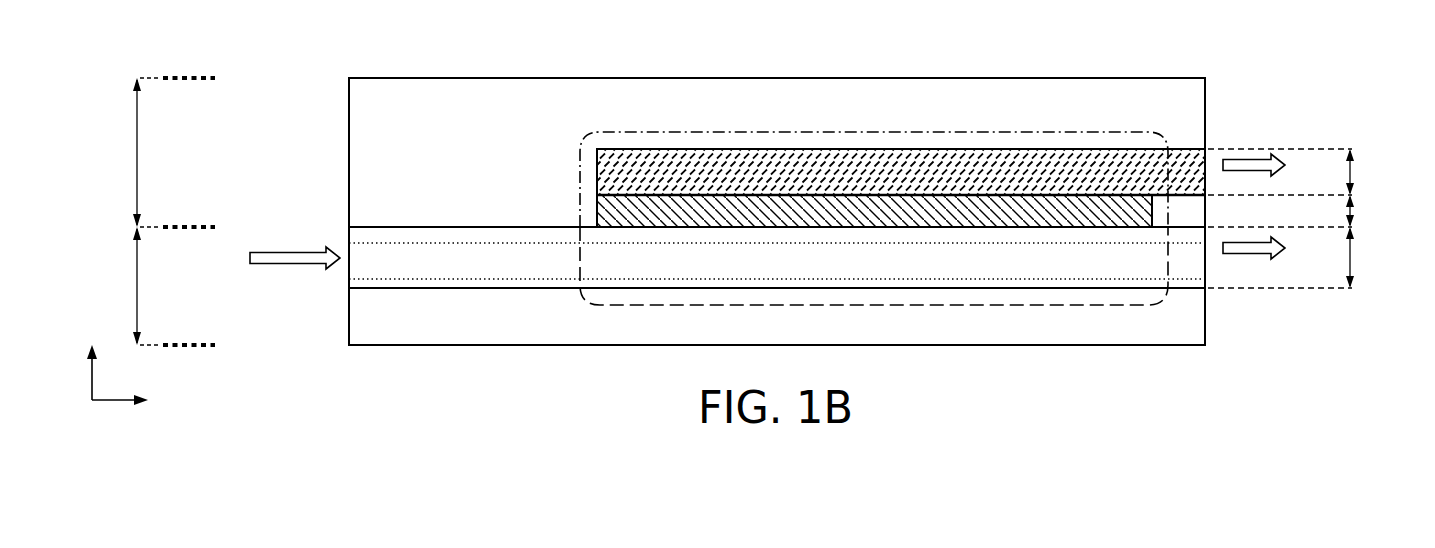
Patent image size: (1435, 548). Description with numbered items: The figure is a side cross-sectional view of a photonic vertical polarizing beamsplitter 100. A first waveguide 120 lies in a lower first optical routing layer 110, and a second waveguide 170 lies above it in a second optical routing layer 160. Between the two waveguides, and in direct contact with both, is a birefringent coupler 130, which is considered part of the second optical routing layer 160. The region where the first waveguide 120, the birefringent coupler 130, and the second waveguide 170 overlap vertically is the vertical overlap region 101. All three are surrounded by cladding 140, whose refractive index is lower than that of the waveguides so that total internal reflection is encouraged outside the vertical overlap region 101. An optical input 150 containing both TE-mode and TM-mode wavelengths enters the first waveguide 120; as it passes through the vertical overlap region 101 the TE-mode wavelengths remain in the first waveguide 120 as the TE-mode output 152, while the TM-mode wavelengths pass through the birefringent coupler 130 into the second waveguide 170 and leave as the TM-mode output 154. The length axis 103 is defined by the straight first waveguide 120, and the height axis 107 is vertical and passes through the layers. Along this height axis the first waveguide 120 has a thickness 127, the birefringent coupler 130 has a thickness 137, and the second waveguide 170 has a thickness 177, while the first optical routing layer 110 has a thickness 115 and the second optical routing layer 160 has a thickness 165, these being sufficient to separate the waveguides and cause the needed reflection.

The photonic vertical polarizing beamsplitter 100 is at (118, 34).
The vertical overlap region 101 is at (777, 132).
The length axis 103 is at (140, 397).
The height axis 107 is at (92, 356).
The first optical routing layer 110 is at (177, 310).
The thickness of the first optical routing layer 115 is at (119, 286).
The first waveguide 120 is at (998, 250).
The thickness of the first waveguide 127 is at (1302, 257).
The birefringent coupler 130 is at (930, 207).
The thickness of the birefringent coupler 137 is at (1302, 211).
The cladding 140 is at (703, 92).
The optical input 150 is at (276, 247).
The TE-mode output 152 is at (1274, 260).
The TM-mode output 154 is at (1274, 175).
The second optical routing layer 160 is at (177, 152).
The thickness of the second optical routing layer 165 is at (119, 152).
The second waveguide 170 is at (853, 163).
The thickness of the second waveguide 177 is at (1302, 172).